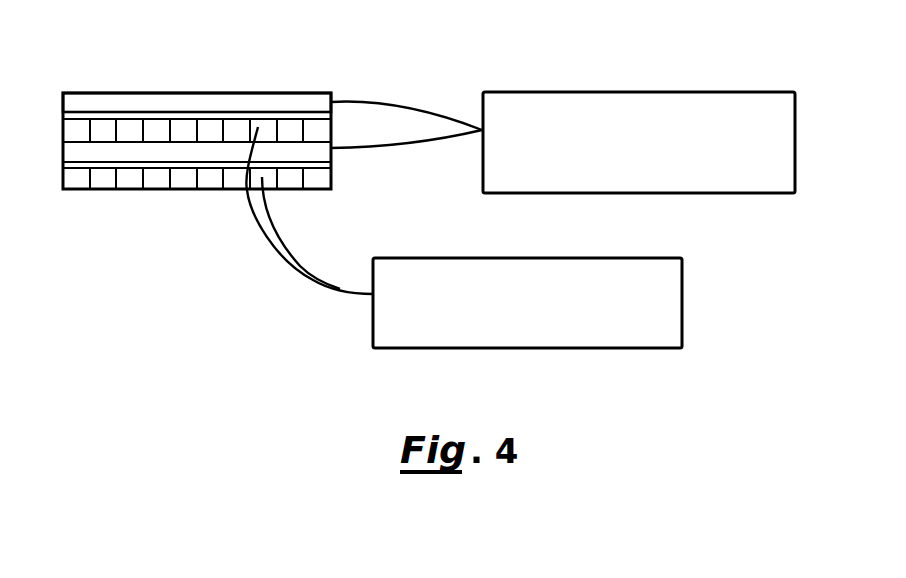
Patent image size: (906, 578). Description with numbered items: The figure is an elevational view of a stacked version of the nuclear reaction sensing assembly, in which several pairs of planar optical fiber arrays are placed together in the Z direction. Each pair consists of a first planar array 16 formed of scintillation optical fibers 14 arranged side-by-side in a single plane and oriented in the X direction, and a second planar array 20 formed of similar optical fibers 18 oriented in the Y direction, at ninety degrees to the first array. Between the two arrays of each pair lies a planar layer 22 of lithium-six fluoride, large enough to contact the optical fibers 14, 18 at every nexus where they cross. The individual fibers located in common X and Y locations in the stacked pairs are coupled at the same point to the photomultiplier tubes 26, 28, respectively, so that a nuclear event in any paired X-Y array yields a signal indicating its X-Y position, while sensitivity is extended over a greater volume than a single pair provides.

The scintillation optical fibers 14 is at (266, 233).
The first planar array 16 is at (158, 136).
The optical fibers 18 is at (397, 143).
The second planar array 20 is at (133, 143).
The planar layer 22 is at (222, 112).
The photomultiplier tube 26 is at (540, 258).
The photomultiplier tube 28 is at (633, 92).